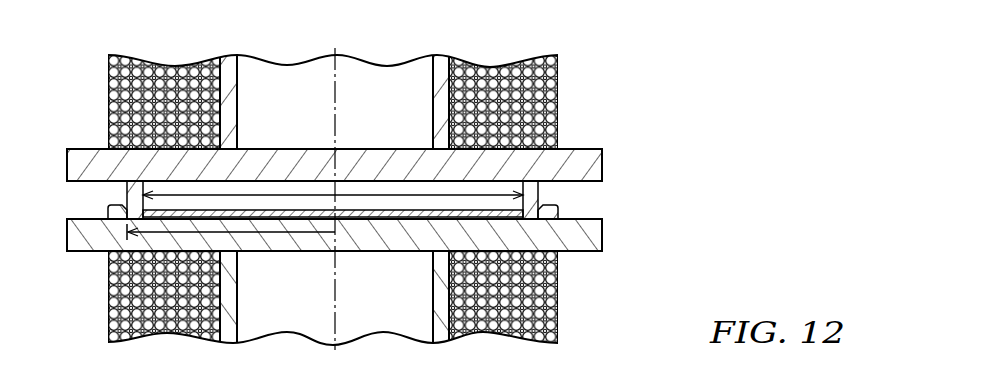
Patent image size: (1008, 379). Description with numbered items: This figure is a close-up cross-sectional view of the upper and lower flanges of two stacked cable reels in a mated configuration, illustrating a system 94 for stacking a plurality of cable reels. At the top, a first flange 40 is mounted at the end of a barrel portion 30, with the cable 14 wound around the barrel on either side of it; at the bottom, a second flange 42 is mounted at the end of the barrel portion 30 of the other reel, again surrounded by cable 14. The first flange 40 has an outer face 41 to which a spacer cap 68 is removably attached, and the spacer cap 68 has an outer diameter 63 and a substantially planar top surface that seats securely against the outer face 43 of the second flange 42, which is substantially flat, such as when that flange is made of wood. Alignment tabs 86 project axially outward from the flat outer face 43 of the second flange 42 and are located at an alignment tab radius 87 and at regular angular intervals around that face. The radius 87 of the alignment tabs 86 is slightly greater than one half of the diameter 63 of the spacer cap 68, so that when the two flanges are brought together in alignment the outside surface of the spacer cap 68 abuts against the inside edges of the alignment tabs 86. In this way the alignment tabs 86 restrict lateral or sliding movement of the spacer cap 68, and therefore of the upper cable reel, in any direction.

The cable 14 is at (560, 83).
The barrel portion 30 is at (237, 100).
The first flange 40 is at (602, 164).
The outer face 41 is at (583, 186).
The second flange 42 is at (67, 229).
The outer face 43 is at (78, 218).
The outer diameter 63 is at (410, 195).
The spacer cap 68 is at (540, 190).
The alignment tabs 86 is at (118, 205).
The alignment tab radius 87 is at (268, 252).
The system for stacking cable reels 94 is at (652, 88).